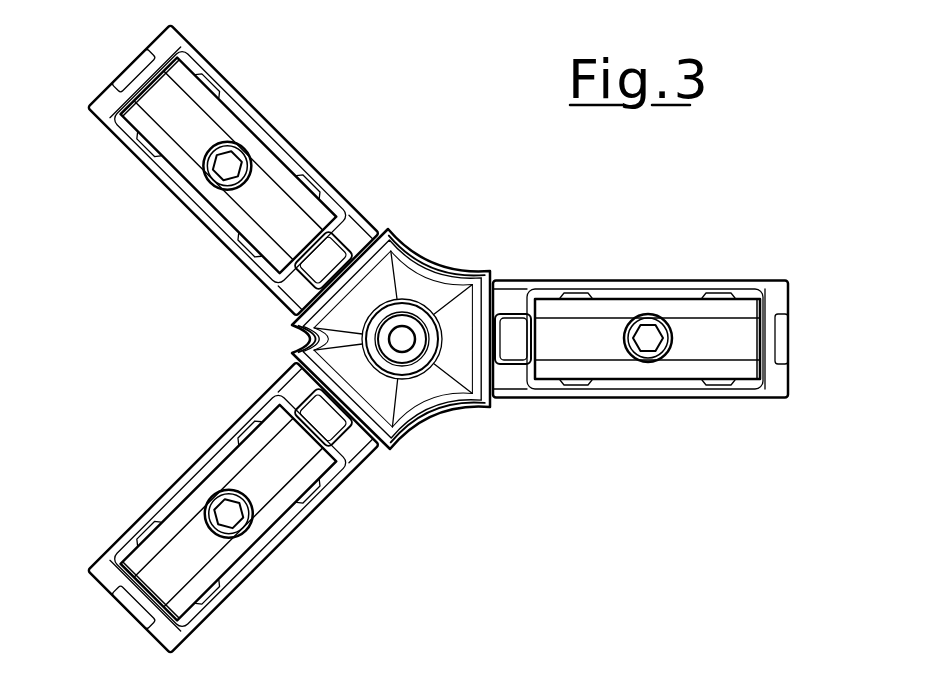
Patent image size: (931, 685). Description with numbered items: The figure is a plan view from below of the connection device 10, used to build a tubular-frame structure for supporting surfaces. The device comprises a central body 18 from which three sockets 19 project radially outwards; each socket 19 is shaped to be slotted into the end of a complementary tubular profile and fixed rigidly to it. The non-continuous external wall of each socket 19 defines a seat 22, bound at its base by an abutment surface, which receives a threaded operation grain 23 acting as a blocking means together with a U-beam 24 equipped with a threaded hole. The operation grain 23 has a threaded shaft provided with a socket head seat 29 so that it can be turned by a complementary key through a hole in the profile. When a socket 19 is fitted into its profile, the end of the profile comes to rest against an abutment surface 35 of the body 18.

The connection device 10 is at (440, 104).
The body 18 is at (432, 268).
The socket 19 is at (94, 129).
The seat 22 is at (327, 255).
The operation grain 23 is at (243, 136).
The U-beam 24 is at (298, 192).
The socket head seat 29 is at (218, 190).
The abutment surface 35 is at (468, 283).